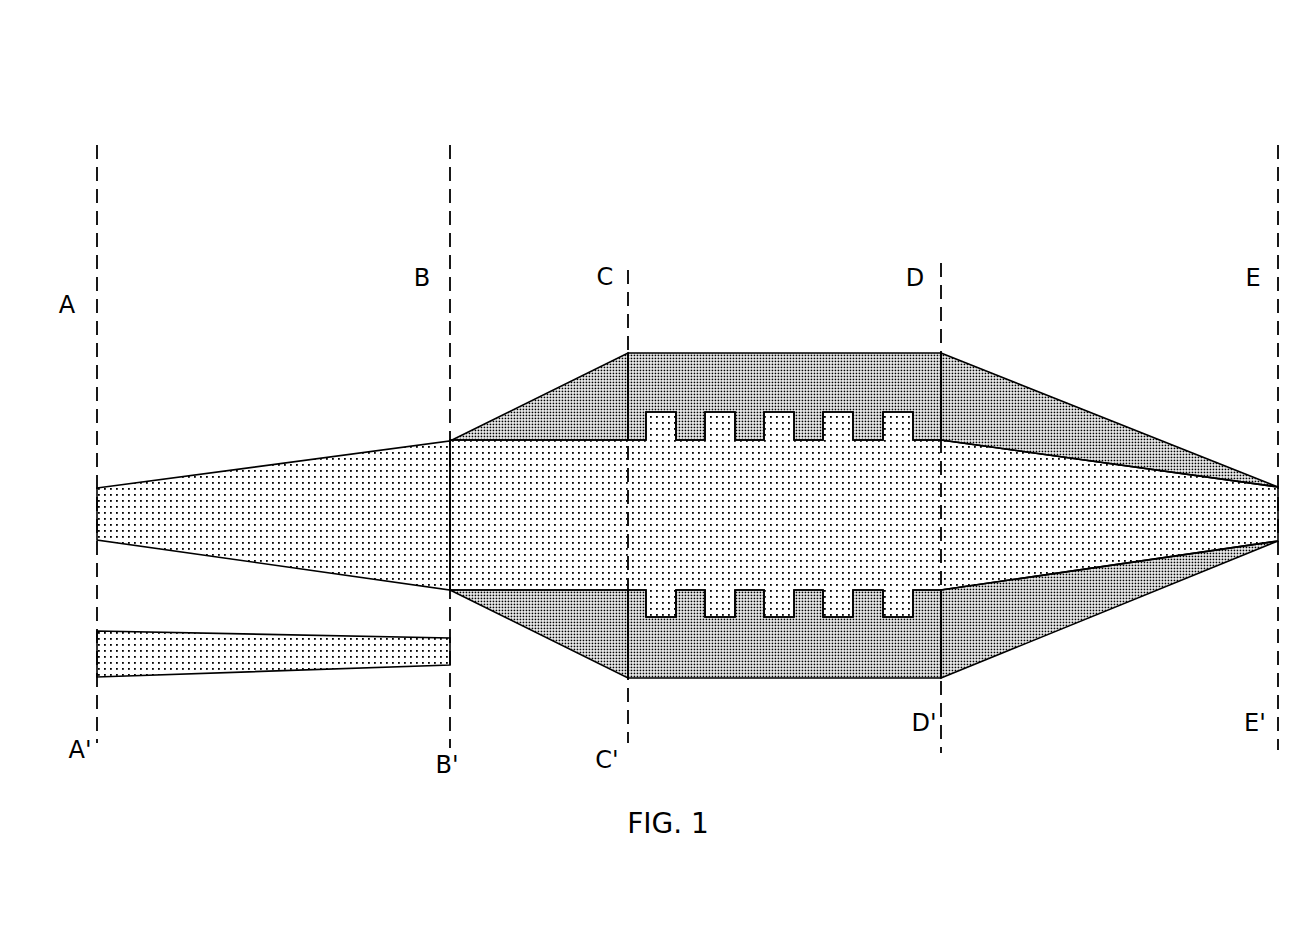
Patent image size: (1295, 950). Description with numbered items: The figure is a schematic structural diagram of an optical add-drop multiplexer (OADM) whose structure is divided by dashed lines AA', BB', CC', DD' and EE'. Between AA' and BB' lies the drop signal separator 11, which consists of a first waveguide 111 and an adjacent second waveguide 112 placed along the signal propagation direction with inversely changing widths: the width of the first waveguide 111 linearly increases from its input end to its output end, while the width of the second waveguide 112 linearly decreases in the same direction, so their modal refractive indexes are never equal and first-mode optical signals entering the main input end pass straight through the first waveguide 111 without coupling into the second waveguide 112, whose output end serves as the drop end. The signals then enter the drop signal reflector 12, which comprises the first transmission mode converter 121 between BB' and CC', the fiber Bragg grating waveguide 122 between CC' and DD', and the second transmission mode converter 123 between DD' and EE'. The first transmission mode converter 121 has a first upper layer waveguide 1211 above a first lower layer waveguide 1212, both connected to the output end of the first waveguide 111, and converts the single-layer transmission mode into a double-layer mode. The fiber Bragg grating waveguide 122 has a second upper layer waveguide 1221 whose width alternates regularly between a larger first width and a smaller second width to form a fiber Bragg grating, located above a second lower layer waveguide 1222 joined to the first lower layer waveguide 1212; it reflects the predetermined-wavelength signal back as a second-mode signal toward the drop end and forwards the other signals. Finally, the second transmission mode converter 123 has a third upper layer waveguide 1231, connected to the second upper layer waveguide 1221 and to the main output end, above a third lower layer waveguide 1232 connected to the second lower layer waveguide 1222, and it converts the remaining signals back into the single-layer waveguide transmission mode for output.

The drop signal separator 11 is at (450, 220).
The drop signal reflector 12 is at (1278, 175).
The first waveguide 111 is at (155, 500).
The second waveguide 112 is at (157, 667).
The first transmission mode converter 121 is at (450, 245).
The fiber Bragg grating waveguide 122 is at (941, 320).
The second transmission mode converter 123 is at (1278, 407).
The first upper layer waveguide 1211 is at (492, 458).
The first lower layer waveguide 1212 is at (582, 648).
The second upper layer waveguide 1221 is at (714, 428).
The second lower layer waveguide 1222 is at (835, 667).
The third upper layer waveguide 1231 is at (1033, 445).
The third lower layer waveguide 1232 is at (1077, 620).